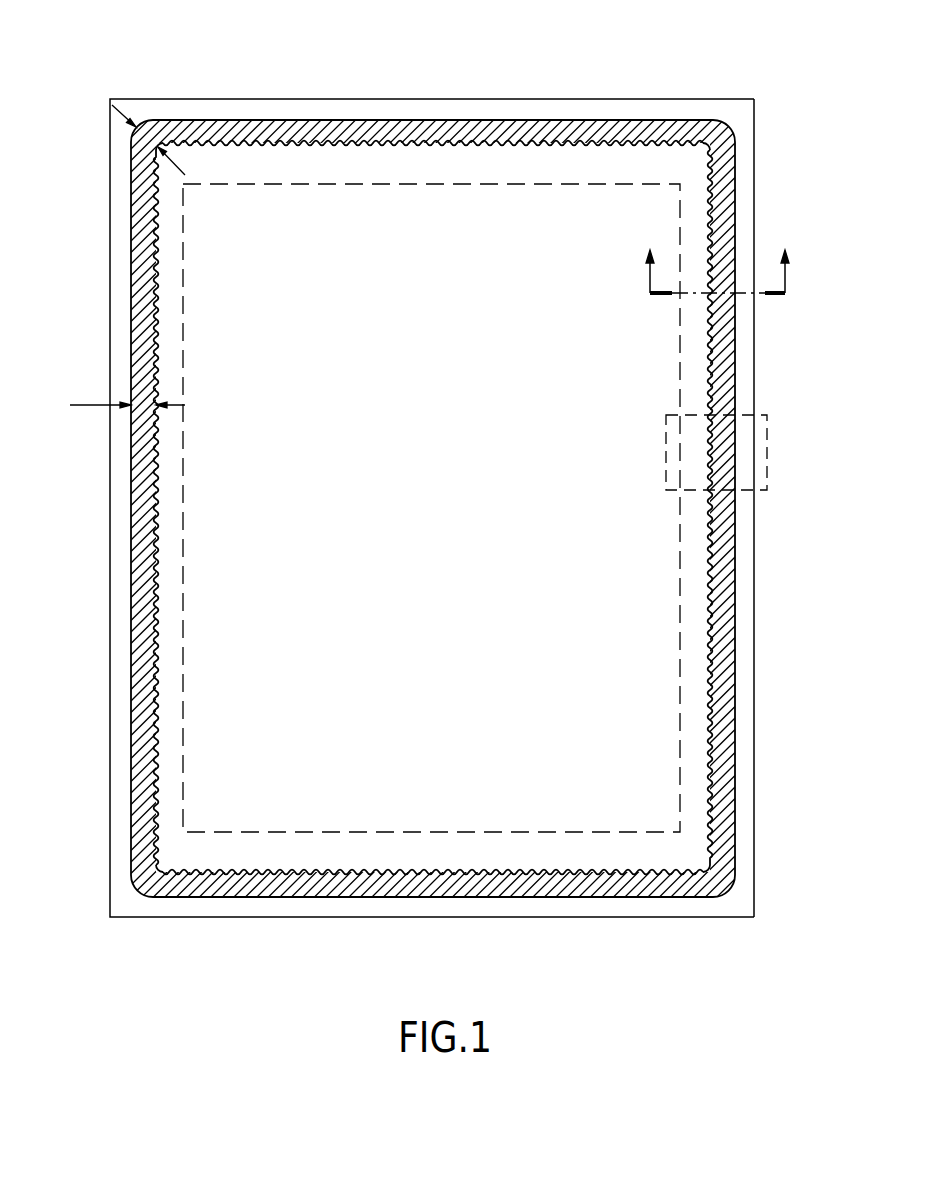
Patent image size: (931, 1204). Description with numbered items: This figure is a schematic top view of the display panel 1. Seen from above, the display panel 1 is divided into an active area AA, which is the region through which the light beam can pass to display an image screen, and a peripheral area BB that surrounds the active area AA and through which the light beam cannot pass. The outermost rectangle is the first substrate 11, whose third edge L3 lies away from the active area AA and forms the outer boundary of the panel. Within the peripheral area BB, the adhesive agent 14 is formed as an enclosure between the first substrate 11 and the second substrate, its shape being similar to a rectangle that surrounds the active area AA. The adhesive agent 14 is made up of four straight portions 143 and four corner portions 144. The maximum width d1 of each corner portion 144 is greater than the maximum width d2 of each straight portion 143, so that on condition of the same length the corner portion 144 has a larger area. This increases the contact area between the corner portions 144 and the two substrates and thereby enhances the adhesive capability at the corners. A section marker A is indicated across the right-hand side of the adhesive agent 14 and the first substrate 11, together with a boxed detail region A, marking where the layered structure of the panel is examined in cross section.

The display panel 1 is at (199, 35).
The first substrate 11 is at (630, 99).
The adhesive agent 14 is at (541, 120).
The straight portion 143 is at (131, 320).
The corner portion 144 is at (131, 141).
The peripheral area BB is at (387, 114).
The active area AA is at (431, 508).
The third edge L3 is at (755, 338).
The section line A-A / detail region A is at (799, 441).
The maximum width of the corner portion d1 is at (161, 143).
The maximum width of the straight portion d2 is at (127, 391).